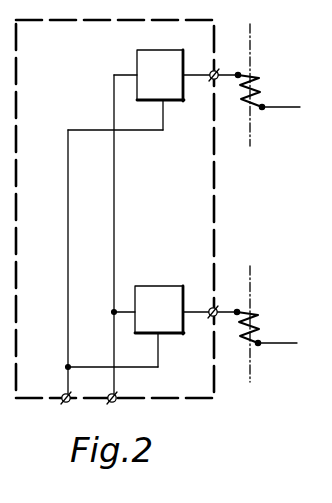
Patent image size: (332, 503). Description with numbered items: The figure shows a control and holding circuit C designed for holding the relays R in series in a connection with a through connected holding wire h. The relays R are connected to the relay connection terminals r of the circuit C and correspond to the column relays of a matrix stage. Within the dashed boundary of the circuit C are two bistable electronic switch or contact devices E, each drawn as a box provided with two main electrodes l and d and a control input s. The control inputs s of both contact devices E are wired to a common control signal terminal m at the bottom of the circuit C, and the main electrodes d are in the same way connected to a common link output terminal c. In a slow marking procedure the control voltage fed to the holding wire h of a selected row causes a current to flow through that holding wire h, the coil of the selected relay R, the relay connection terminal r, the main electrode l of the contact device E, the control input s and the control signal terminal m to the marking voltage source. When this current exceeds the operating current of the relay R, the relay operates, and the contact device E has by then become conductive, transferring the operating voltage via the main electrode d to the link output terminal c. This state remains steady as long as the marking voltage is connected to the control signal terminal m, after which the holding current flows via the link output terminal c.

The control and holding circuit C is at (215, 231).
The bistable electronic switch or contact device E is at (172, 101).
The control input s is at (134, 75).
The main electrode d is at (161, 102).
The main electrode l is at (191, 75).
The relay connection terminal r is at (218, 72).
The relay R is at (261, 85).
The holding wire h is at (278, 107).
The link output terminal c is at (65, 409).
The control signal terminal m is at (109, 409).